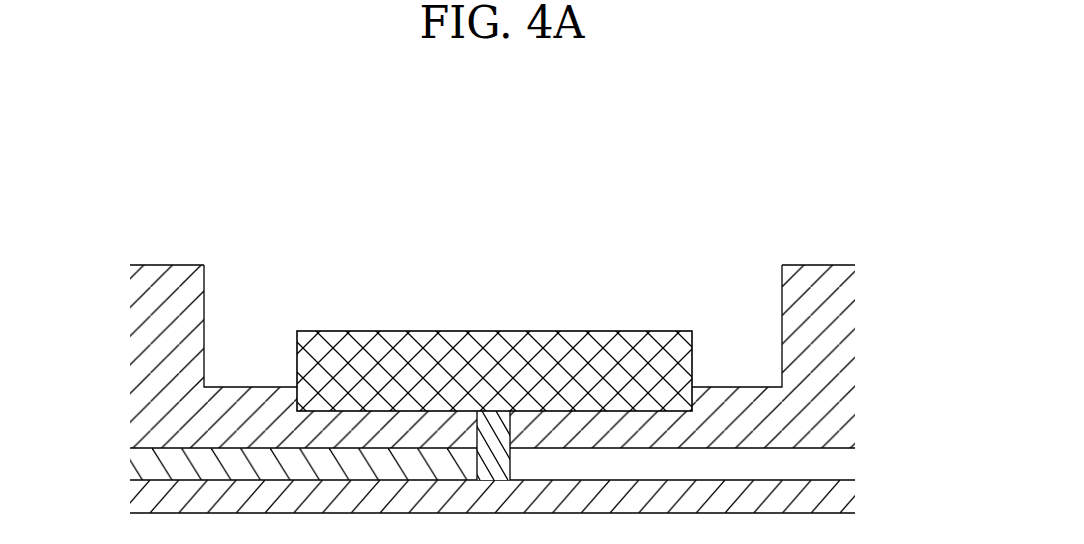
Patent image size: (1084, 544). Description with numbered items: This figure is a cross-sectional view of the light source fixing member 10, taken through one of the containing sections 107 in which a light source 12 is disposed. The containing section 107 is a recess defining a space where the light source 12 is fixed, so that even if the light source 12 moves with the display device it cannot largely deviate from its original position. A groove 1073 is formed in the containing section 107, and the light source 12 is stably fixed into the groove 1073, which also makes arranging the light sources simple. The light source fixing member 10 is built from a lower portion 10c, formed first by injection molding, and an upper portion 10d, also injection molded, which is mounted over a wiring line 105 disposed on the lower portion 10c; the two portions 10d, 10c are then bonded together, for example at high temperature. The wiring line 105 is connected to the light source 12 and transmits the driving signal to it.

The light source fixing member 10 is at (493, 328).
The upper portion 10d is at (852, 357).
The lower portion 10c is at (840, 497).
The wiring line 105 is at (135, 473).
The containing section 107 is at (238, 343).
The groove 1073 is at (352, 410).
The light source 12 is at (573, 331).